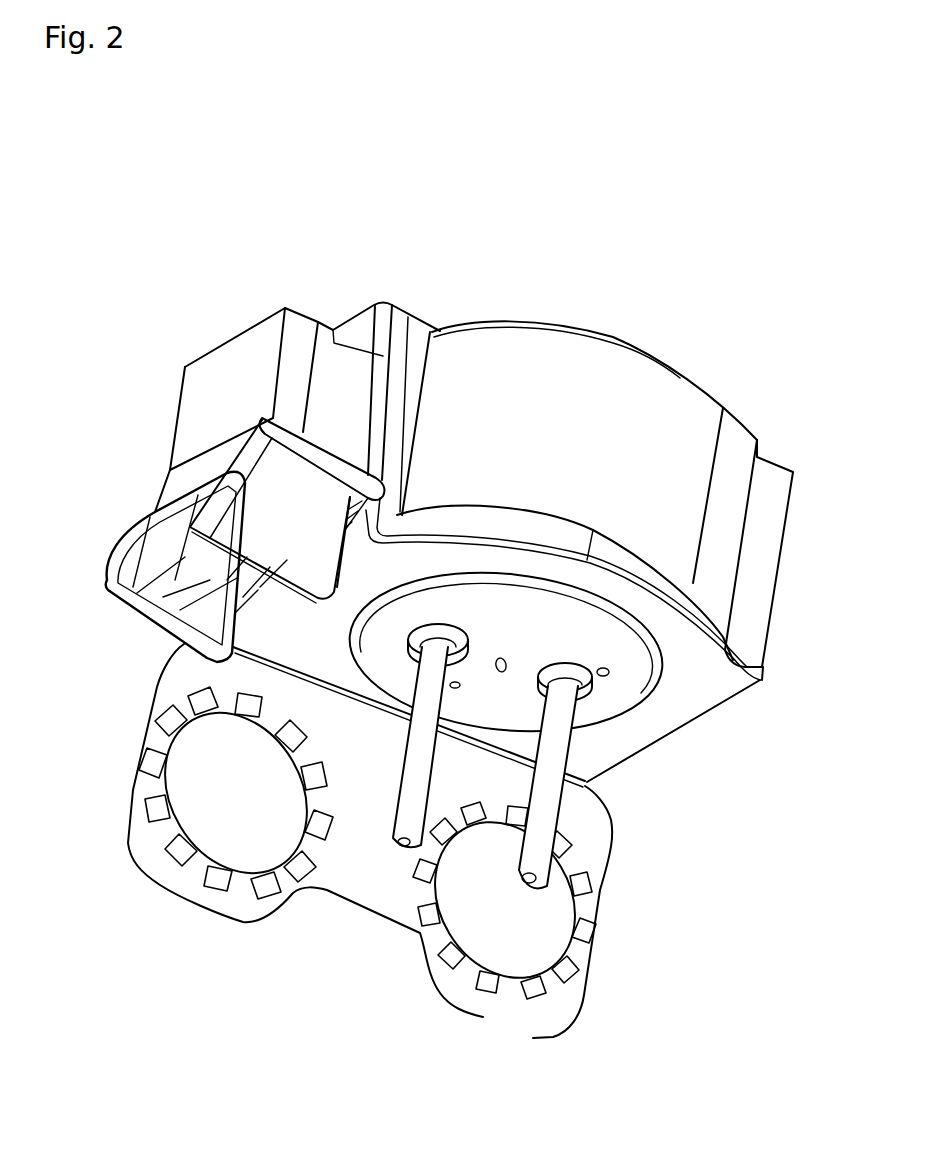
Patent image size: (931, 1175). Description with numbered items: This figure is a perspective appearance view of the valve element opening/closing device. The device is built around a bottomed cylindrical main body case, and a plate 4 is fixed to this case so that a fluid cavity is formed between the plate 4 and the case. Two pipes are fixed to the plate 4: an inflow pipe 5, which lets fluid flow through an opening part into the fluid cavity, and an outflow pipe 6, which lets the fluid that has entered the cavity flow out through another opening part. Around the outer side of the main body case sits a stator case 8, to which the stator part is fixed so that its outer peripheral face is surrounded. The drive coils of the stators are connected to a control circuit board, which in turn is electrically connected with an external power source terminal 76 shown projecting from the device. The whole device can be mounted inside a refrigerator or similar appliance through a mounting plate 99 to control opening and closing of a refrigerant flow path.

The plate 4 is at (636, 690).
The inflow pipe 5 is at (415, 782).
The outflow pipe 6 is at (540, 843).
The stator case 8 is at (757, 576).
The external power source terminal 76 is at (147, 628).
The mounting plate 99 is at (591, 826).